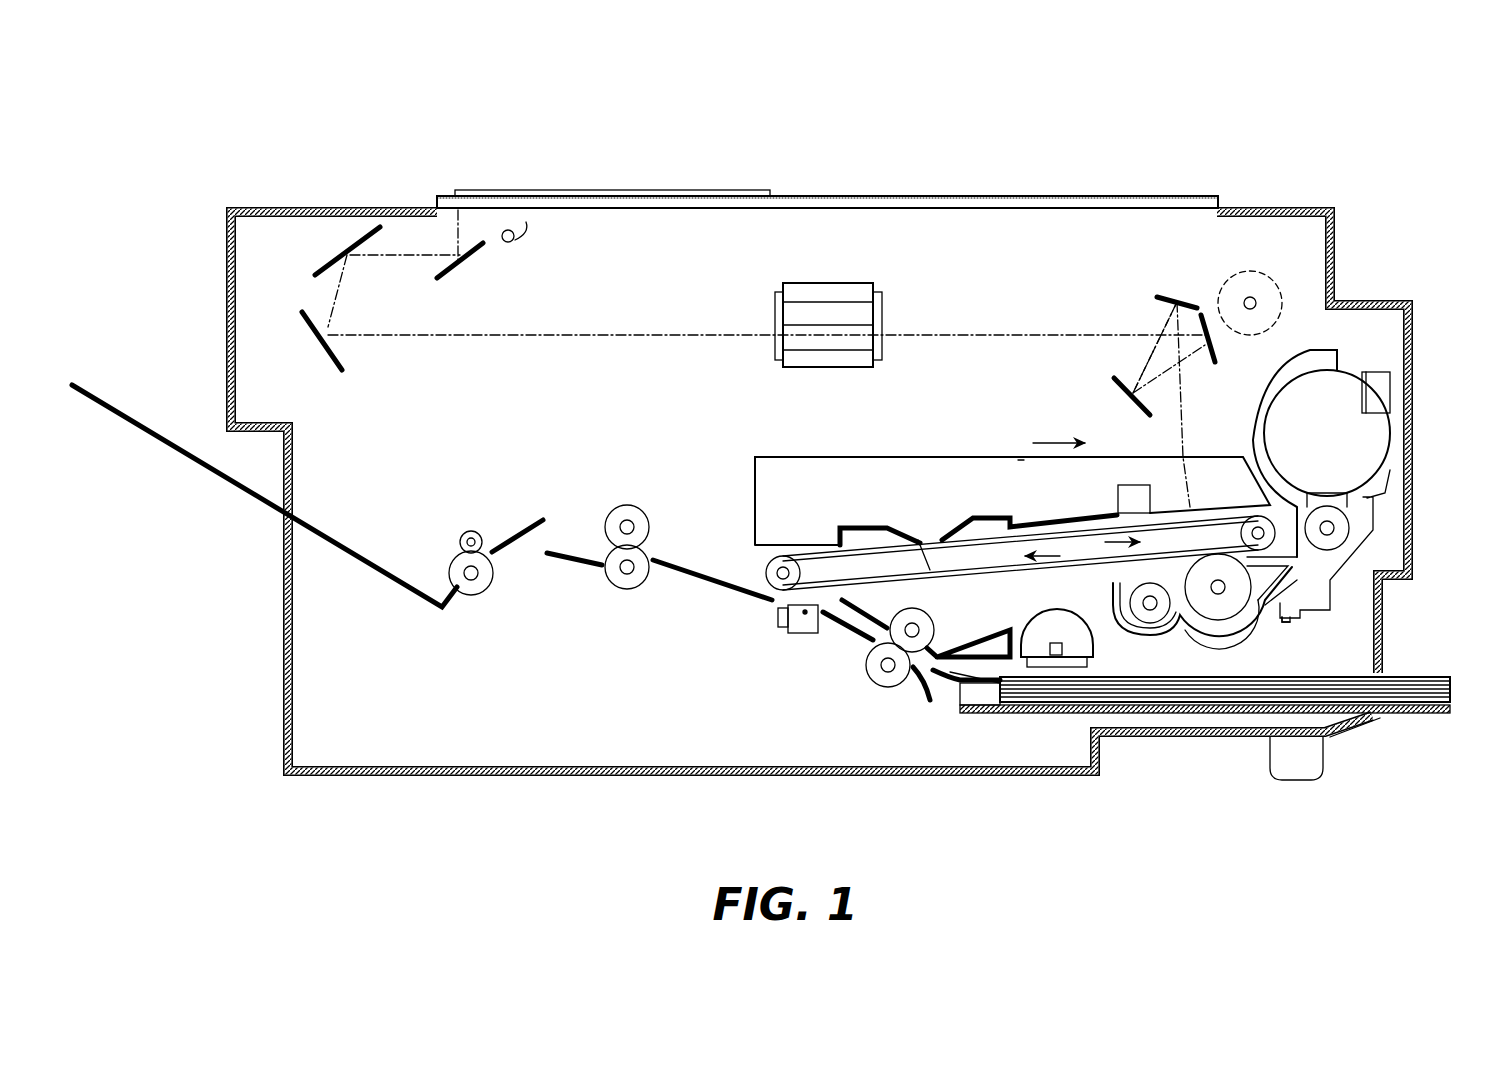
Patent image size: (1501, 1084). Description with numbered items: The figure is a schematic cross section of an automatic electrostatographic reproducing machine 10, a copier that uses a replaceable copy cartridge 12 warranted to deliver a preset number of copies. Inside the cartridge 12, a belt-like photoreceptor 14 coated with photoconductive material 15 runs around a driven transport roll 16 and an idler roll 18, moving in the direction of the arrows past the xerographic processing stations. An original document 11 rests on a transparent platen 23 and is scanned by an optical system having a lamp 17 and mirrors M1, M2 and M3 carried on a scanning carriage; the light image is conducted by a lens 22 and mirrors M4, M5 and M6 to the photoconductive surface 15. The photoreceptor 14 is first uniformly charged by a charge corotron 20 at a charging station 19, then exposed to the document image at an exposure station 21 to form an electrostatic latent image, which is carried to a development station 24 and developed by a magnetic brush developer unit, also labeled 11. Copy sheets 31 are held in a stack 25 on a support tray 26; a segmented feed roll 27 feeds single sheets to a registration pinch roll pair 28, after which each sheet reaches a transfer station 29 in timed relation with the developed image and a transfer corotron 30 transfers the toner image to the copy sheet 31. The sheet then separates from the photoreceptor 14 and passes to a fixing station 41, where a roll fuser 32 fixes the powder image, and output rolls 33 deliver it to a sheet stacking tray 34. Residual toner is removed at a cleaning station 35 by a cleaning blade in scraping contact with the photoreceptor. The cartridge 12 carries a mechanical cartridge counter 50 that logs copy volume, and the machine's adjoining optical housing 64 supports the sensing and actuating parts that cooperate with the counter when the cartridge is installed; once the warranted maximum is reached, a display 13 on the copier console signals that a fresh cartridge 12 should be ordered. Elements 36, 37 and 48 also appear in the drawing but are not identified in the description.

The automatic electrostatographic reproducing machine 10 is at (1290, 176).
The original document 11 is at (527, 192).
The transparent platen 23 is at (965, 195).
The lens 22 is at (820, 283).
The lamp 17 is at (520, 245).
The mirror M1 is at (462, 272).
The mirror M2 is at (325, 265).
The mirror M3 is at (312, 340).
The mirror M4 is at (1220, 348).
The mirror M5 is at (1125, 405).
The mirror M6 is at (1170, 292).
The display 13 is at (1040, 440).
The exposure station 21 is at (1195, 477).
The cleaning station 35 is at (1355, 425).
The developer roller 37 is at (1350, 520).
The photoconductive material 15 is at (1000, 575).
The idler roll 18 is at (781, 556).
The driven transport roll 16 is at (1250, 518).
The replaceable copy cartridge 12 is at (793, 457).
The mechanical cartridge counter 50 is at (892, 528).
The transfer corotron 36 is at (948, 530).
The belt-like photoreceptor 14 is at (930, 570).
The housing top 48 is at (975, 457).
The charge corotron 20 is at (1134, 487).
The charging station 19 is at (1115, 492).
The sheet stacking tray 34 is at (358, 552).
The output rolls 33 is at (476, 530).
The roll fuser 32 is at (628, 505).
The fixing station 41 is at (613, 590).
The transfer station 29 is at (753, 573).
The transfer corotron 30 is at (790, 636).
The registration pinch roll pair 28 is at (930, 610).
The support tray 26 is at (1020, 717).
The segmented feed roll 27 is at (1073, 615).
The development station 24 is at (1178, 645).
The optical housing 64 is at (1283, 623).
The stack 25 is at (1415, 676).
The copy sheet 31 is at (1183, 707).